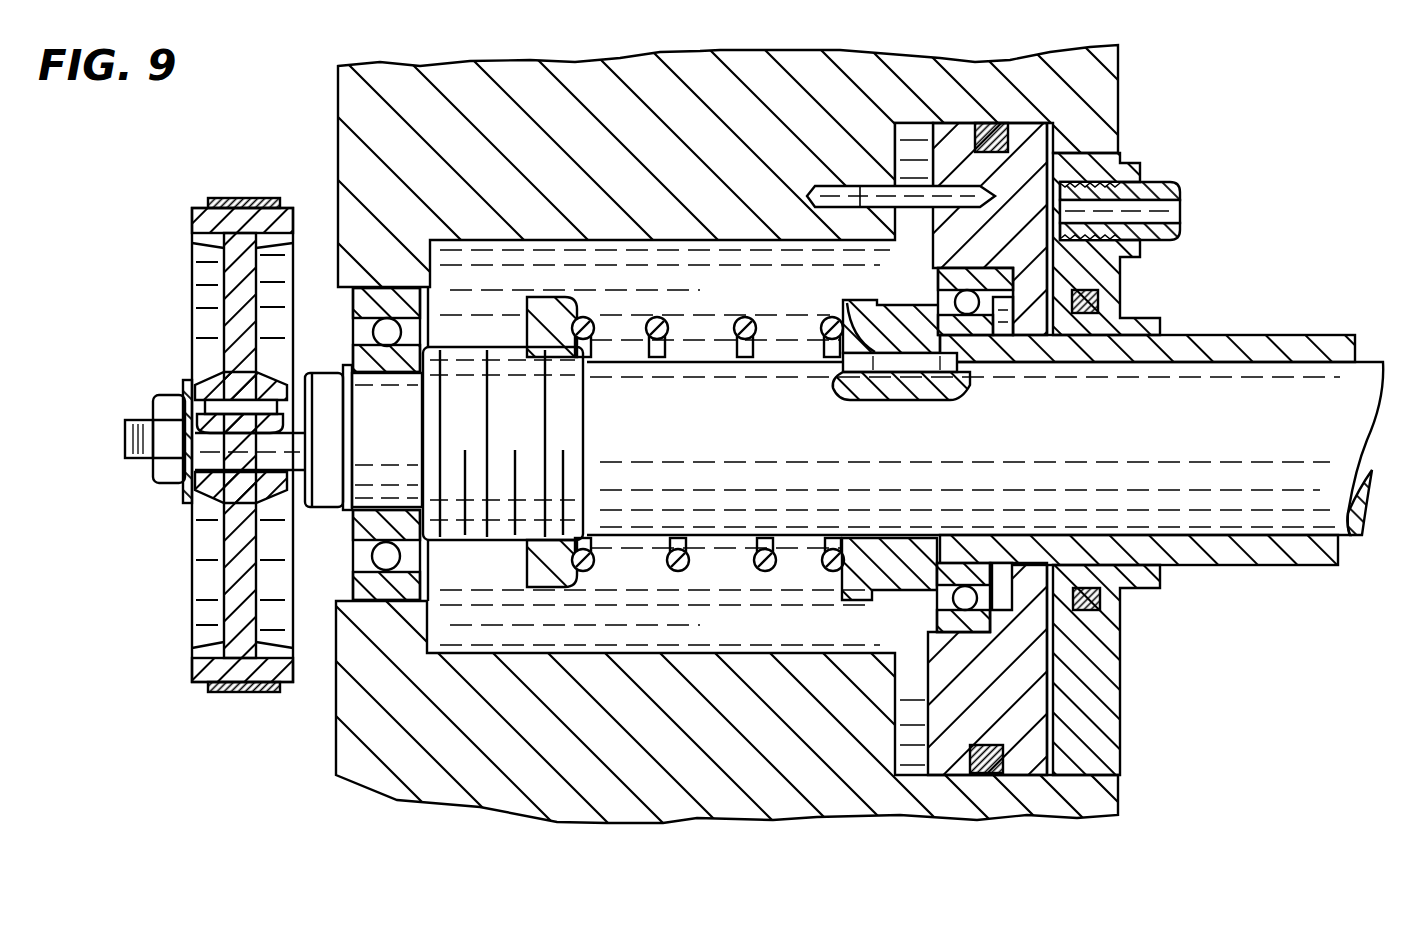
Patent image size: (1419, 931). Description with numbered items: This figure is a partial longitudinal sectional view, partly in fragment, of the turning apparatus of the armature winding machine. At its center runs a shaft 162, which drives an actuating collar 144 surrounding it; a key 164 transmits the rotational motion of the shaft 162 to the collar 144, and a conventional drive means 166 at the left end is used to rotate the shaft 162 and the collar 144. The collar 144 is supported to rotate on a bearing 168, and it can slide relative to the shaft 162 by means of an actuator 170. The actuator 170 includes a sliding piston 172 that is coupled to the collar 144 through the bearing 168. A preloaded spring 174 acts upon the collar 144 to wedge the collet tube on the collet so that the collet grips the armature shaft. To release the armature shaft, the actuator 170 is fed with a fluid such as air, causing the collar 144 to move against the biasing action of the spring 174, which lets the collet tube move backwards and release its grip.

The actuating collar 144 is at (1320, 352).
The shaft 162 is at (1352, 390).
The key 164 is at (843, 316).
The drive means 166 is at (252, 176).
The bearing 168 is at (978, 284).
The actuator 170 is at (1055, 153).
The sliding piston 172 is at (1037, 142).
The preloaded spring 174 is at (684, 568).